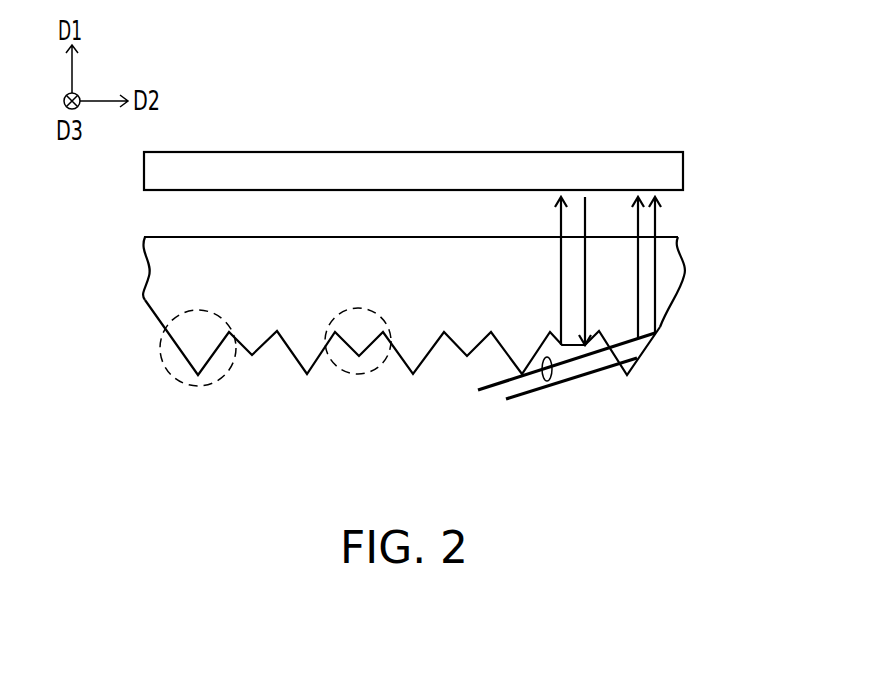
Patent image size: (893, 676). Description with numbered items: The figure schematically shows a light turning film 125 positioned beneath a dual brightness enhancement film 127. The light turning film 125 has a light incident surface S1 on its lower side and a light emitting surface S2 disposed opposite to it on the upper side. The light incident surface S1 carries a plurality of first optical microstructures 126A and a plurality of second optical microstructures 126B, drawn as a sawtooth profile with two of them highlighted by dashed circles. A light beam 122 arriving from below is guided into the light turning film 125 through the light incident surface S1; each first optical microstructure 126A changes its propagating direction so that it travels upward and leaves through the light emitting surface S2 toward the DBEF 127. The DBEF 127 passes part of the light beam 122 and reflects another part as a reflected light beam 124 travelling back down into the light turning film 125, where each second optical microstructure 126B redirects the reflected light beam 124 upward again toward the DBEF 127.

The light beam 122 is at (546, 384).
The reflected light beam 124 is at (587, 218).
The light turning film 125 is at (453, 287).
The first optical microstructures 126A is at (187, 386).
The second optical microstructures 126B is at (353, 375).
The dual brightness enhancement film 127 is at (675, 171).
The light incident surface S1 is at (662, 325).
The light emitting surface S2 is at (670, 233).